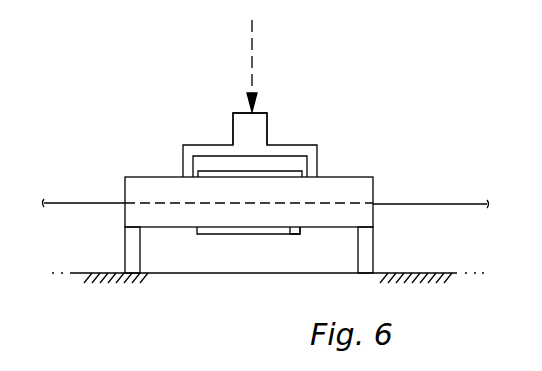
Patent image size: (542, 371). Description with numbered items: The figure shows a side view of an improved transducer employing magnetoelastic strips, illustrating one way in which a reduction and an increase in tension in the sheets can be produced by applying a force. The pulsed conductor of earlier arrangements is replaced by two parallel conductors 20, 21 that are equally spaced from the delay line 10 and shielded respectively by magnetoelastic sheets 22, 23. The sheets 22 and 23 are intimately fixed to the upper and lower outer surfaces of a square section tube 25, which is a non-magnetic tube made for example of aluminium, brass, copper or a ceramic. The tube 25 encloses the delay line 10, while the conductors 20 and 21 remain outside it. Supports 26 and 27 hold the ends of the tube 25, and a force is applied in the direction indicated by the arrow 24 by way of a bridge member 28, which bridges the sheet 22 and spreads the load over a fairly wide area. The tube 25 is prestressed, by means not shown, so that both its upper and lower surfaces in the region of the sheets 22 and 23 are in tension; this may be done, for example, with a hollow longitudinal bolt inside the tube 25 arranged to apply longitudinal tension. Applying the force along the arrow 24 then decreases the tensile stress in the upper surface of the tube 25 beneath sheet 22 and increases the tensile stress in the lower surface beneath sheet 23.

The delay line 10 is at (443, 203).
The parallel conductor 20 is at (250, 163).
The parallel conductor 21 is at (249, 241).
The magnetoelastic sheet 22 is at (292, 172).
The magnetoelastic sheet 23 is at (295, 235).
The arrow 24 is at (252, 50).
The square section tube 25 is at (361, 177).
The support 26 is at (130, 247).
The support 27 is at (366, 249).
The bridge member 28 is at (262, 124).